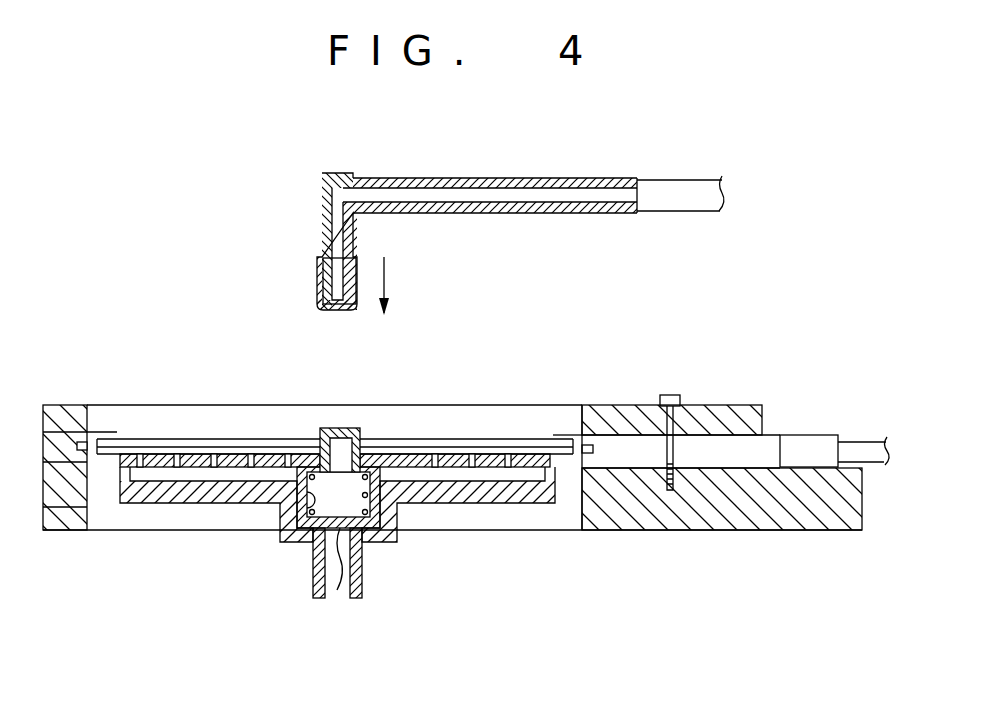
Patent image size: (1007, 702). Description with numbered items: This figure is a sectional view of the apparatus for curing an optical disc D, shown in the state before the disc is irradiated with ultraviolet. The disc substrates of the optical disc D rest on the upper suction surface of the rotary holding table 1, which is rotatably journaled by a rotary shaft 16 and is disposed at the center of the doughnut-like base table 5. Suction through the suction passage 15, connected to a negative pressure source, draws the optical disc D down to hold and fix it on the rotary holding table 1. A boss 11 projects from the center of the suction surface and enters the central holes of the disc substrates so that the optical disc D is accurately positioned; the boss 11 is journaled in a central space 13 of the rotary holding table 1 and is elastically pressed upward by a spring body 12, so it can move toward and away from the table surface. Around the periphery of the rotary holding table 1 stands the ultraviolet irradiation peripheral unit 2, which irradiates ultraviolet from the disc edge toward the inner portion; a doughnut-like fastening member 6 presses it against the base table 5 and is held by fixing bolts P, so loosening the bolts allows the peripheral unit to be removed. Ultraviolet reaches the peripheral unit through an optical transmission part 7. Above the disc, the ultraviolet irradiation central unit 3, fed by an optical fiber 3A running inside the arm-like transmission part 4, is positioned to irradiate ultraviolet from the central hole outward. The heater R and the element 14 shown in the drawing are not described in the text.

The rotary holding table 1 is at (470, 497).
The ultraviolet irradiation peripheral unit 2 is at (760, 448).
The ultraviolet irradiation central unit 3 is at (320, 300).
The optical fiber 3A is at (327, 227).
The arm-like transmission part 4 is at (520, 185).
The base table 5 is at (722, 517).
The fastening member 6 is at (712, 417).
The optical transmission part 7 is at (863, 445).
The boss 11 is at (342, 430).
The spring body 12 is at (312, 515).
The central space 13 is at (348, 498).
The support tray 14 is at (510, 478).
The suction passage 15 is at (337, 592).
The rotary shaft 16 is at (365, 572).
The optical disc D is at (155, 438).
The heater R is at (457, 450).
The fixing bolt P is at (672, 393).